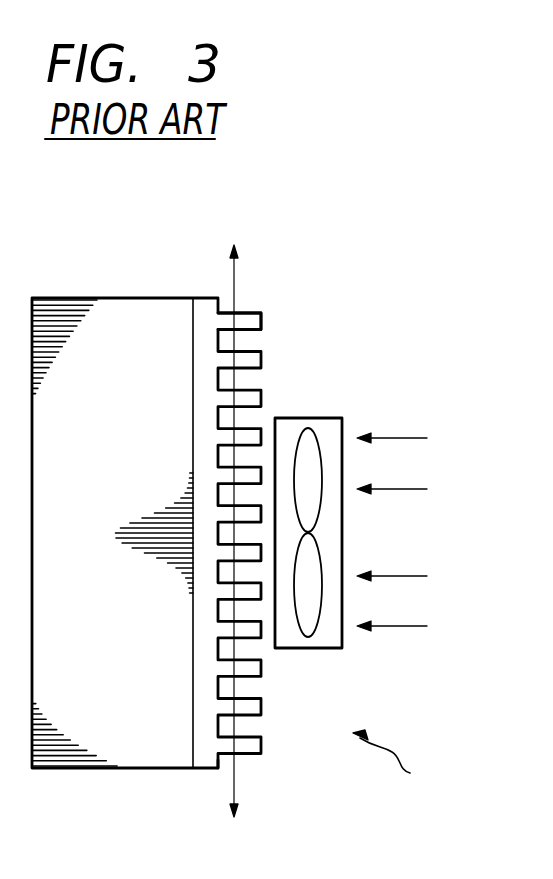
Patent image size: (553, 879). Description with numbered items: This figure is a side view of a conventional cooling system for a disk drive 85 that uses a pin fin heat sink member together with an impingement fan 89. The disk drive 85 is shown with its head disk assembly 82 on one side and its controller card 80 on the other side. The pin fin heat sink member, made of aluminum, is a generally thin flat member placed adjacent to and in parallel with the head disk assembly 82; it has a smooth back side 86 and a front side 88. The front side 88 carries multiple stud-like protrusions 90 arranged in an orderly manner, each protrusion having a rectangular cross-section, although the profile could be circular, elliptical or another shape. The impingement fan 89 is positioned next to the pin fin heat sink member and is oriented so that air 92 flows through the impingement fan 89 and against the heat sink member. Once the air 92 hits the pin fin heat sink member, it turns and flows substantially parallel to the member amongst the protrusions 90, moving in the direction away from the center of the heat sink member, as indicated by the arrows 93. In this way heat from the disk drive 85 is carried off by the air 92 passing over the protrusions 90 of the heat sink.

The controller card 80 is at (75, 747).
The head disk assembly 82 is at (108, 320).
The disk drive 85 is at (405, 763).
The smooth back side 86 is at (195, 772).
The front side 88 is at (220, 772).
The impingement fan 89 is at (325, 642).
The protrusions 90 is at (258, 318).
The air 92 is at (433, 528).
The arrows 93 is at (237, 283).